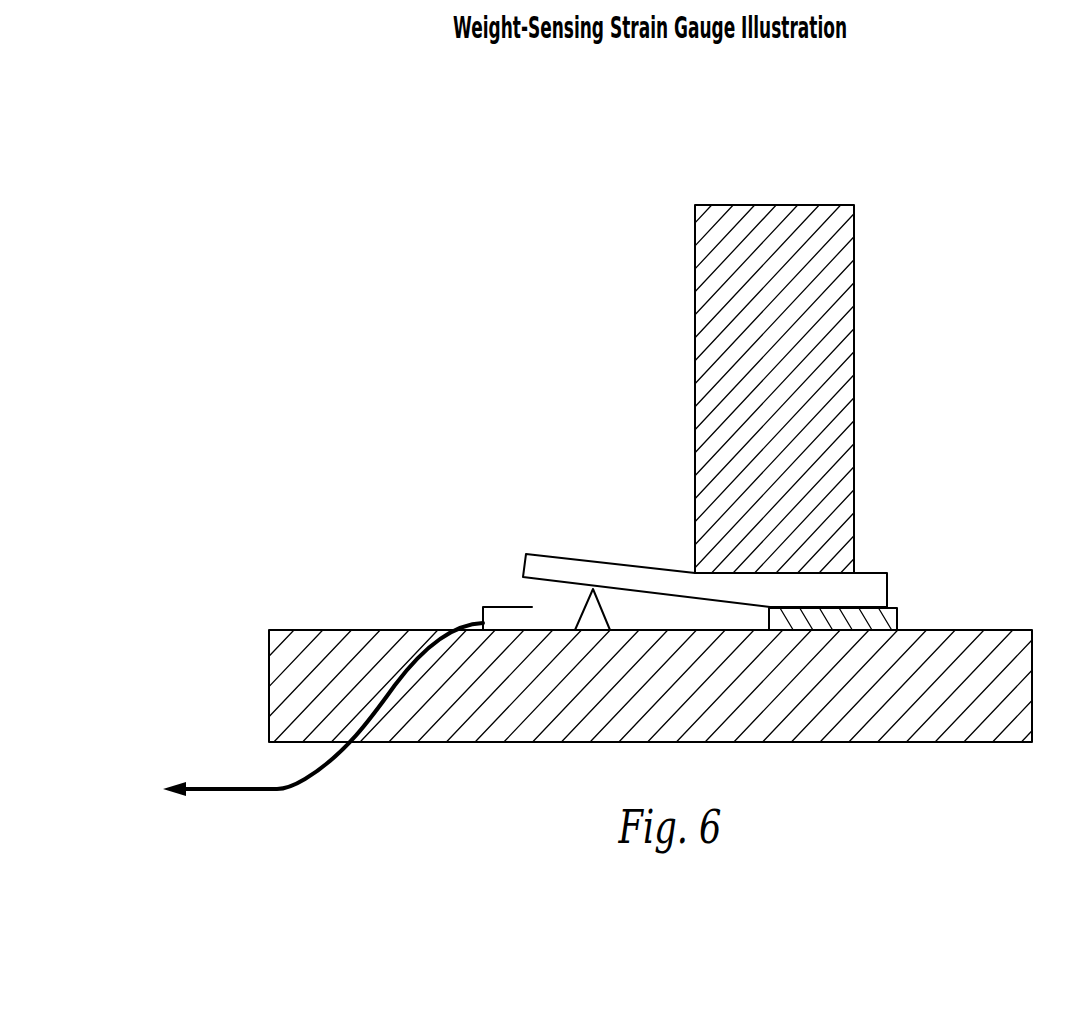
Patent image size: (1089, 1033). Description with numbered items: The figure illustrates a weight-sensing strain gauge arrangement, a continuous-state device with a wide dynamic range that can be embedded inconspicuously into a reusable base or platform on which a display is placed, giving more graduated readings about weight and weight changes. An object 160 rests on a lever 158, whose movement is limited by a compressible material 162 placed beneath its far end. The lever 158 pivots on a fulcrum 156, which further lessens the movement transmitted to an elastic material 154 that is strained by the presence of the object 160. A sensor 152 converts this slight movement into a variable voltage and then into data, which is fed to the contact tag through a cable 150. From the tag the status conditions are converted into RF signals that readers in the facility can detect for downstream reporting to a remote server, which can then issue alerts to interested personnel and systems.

The cable 150 is at (205, 784).
The sensor 152 is at (470, 611).
The elastic material 154 is at (520, 588).
The fulcrum 156 is at (592, 640).
The lever 158 is at (574, 554).
The object 160 is at (690, 279).
The compressible material 162 is at (905, 616).